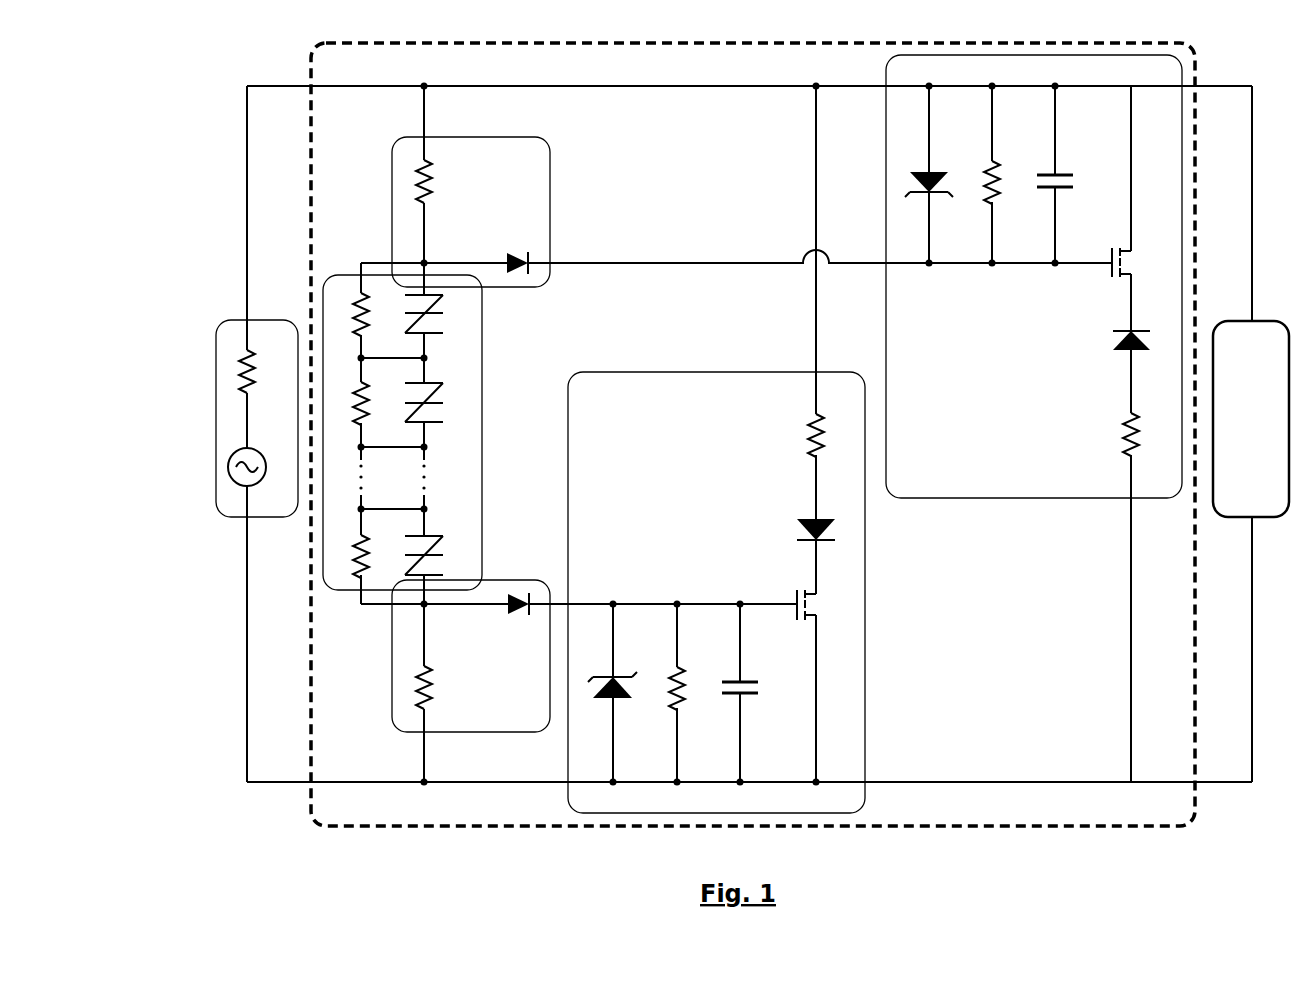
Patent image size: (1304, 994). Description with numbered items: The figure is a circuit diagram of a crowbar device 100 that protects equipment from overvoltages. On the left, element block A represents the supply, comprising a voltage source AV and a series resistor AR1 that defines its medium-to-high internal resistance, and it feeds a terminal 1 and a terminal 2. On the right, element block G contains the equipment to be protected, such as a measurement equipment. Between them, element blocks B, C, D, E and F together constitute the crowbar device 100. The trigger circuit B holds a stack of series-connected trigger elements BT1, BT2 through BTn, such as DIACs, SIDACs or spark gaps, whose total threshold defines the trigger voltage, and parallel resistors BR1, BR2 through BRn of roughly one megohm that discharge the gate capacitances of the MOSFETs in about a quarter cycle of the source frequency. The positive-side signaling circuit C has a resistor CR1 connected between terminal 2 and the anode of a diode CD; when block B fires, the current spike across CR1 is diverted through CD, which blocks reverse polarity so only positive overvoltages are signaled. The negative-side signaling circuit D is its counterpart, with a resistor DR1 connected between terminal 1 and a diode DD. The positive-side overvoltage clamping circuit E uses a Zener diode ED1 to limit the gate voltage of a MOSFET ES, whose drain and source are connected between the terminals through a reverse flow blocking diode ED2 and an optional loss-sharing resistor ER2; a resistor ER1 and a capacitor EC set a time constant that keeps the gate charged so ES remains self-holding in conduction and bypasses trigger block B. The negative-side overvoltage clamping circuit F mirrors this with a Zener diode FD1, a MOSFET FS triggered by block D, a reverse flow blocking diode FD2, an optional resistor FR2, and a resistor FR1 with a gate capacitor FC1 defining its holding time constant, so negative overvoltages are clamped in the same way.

The terminal 1 is at (243, 87).
The terminal 2 is at (243, 781).
The crowbar device 100 is at (922, 826).
The element block A is at (223, 437).
The series resistor AR1 is at (240, 372).
The voltage source AV is at (230, 467).
The trigger circuit B is at (424, 452).
The parallel resistor BR1 is at (355, 318).
The parallel resistor BR2 is at (355, 406).
The parallel resistor BRn is at (352, 546).
The trigger element BT1 is at (452, 322).
The trigger element BT2 is at (452, 395).
The trigger element BTn is at (448, 550).
The positive-side signaling circuit C is at (435, 675).
The resistor CR1 is at (405, 688).
The diode CD is at (503, 620).
The negative-side signaling circuit D is at (471, 232).
The resistor DR1 is at (412, 182).
The diode DD is at (537, 255).
The positive-side overvoltage clamping circuit E is at (724, 592).
The resistor ER1 is at (682, 712).
The resistor ER2 is at (798, 437).
The Zener diode ED1 is at (615, 700).
The reverse flow blocking diode ED2 is at (798, 537).
The MOSFET ES is at (812, 606).
The capacitor EC is at (742, 695).
The negative-side overvoltage clamping circuit F is at (1004, 276).
The Zener diode FD1 is at (915, 173).
The reverse flow blocking diode FD2 is at (1112, 343).
The resistor FR1 is at (985, 198).
The resistor FR2 is at (1118, 430).
The capacitor FC1 is at (1048, 190).
The MOSFET FS is at (1107, 270).
The element block G is at (1251, 419).